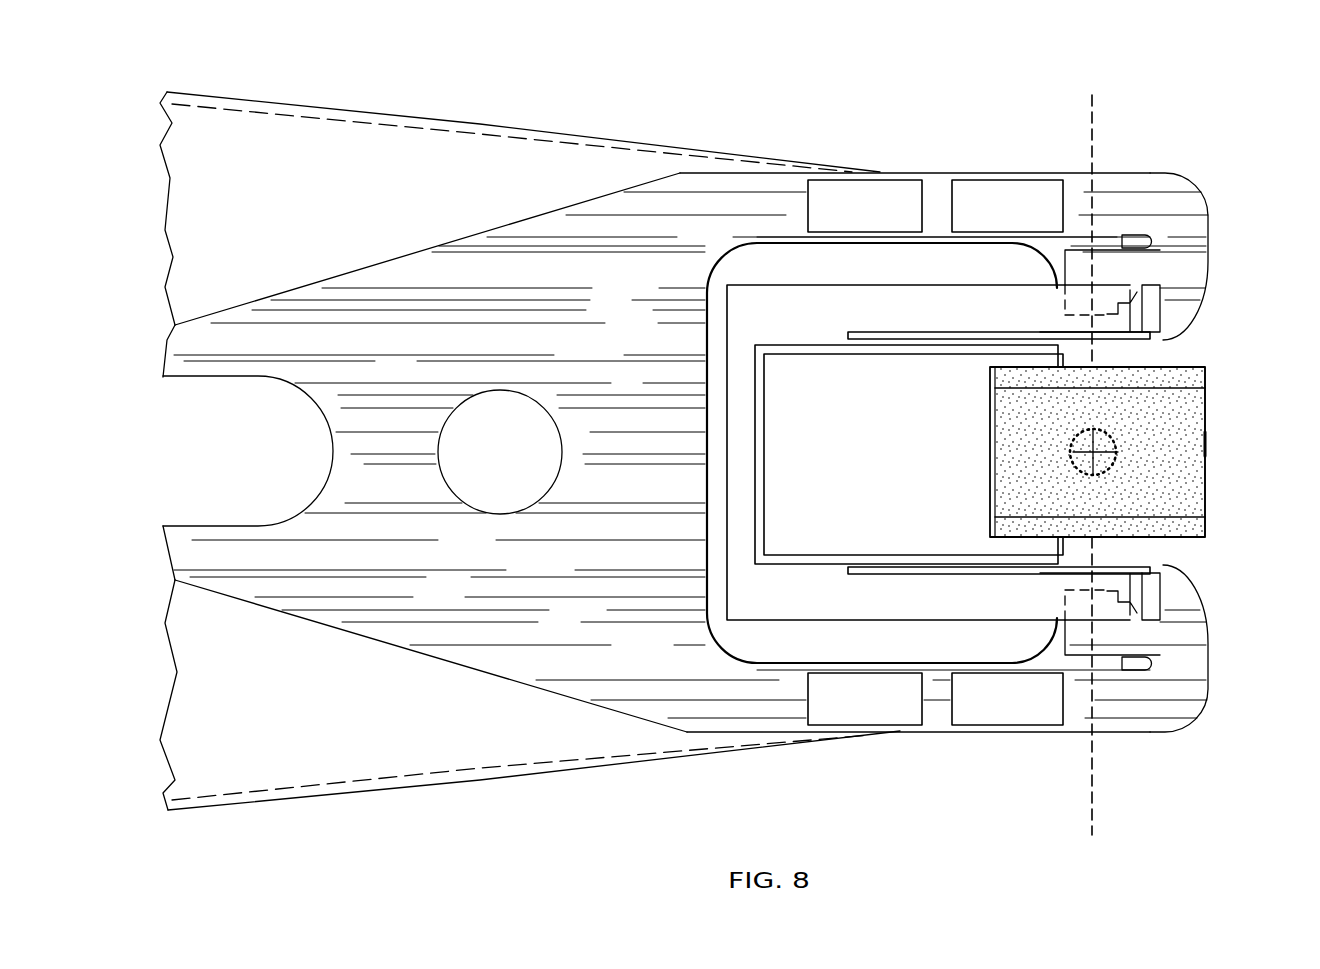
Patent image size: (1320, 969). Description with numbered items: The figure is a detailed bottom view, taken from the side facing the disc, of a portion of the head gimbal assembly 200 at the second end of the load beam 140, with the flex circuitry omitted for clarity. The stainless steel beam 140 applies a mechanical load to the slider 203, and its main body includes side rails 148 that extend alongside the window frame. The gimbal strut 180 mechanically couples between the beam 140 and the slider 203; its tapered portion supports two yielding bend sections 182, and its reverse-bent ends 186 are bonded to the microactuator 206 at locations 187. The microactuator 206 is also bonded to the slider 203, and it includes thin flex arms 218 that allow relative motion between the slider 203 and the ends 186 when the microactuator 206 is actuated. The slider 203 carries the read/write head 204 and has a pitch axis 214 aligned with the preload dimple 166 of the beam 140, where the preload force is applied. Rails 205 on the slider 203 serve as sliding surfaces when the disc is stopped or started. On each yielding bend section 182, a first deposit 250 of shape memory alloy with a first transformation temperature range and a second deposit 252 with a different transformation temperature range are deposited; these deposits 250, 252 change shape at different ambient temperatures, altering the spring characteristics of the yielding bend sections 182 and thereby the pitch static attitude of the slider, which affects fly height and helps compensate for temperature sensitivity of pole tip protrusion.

The load beam 140 is at (235, 189).
The side rails 148 is at (286, 106).
The gimbal strut 180 is at (543, 284).
The yielding bend sections 182 is at (1052, 172).
The ends 186 is at (1125, 300).
The locations 187 is at (1093, 315).
The head gimbal assembly 200 is at (608, 813).
The slider 203 is at (1141, 451).
The read/write head 204 is at (1207, 440).
The rails 205 is at (1206, 372).
The microactuator 206 is at (850, 260).
The pitch axis 214 is at (1096, 118).
The flex arms 218 is at (1148, 341).
The preload dimple 166 is at (1105, 470).
The first deposit 250 is at (844, 219).
The second deposit 252 is at (992, 219).